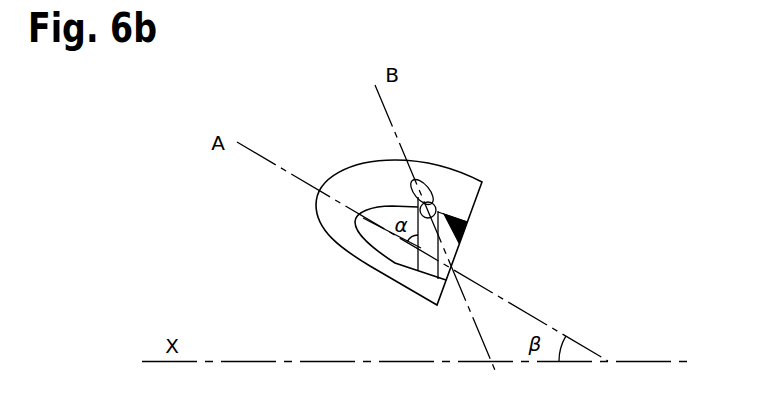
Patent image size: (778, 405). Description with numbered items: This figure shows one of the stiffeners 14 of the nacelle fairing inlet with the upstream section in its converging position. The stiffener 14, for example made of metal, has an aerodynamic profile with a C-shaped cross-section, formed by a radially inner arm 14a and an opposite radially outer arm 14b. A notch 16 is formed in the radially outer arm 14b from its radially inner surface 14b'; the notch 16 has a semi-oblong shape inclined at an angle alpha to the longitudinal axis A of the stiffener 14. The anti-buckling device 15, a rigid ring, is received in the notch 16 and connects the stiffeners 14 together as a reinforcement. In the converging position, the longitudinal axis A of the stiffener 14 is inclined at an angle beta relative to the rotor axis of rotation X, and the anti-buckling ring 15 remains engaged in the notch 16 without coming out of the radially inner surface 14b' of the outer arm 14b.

The stiffener 14 is at (457, 213).
The radially inner arm 14a is at (392, 276).
The radially outer arm 14b is at (487, 238).
The radially inner surface 14b' is at (515, 242).
The anti-buckling device 15 is at (398, 252).
The notch 16 is at (437, 193).